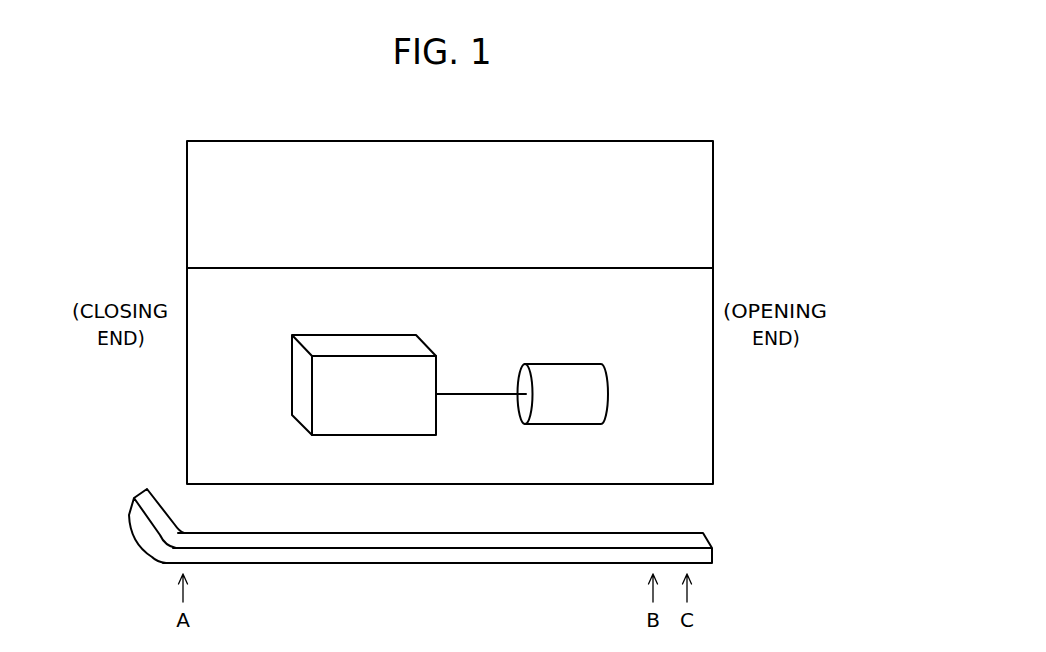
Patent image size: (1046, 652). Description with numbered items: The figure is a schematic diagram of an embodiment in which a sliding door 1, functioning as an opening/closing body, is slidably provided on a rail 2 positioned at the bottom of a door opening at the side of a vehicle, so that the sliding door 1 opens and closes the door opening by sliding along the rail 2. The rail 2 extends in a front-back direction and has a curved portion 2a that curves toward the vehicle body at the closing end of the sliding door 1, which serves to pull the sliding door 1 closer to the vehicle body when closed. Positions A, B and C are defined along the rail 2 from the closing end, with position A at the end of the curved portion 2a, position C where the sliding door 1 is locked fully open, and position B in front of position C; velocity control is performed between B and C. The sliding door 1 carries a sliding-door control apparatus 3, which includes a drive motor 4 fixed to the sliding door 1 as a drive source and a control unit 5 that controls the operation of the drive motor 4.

The sliding door 1 is at (746, 167).
The rail 2 is at (408, 537).
The curved portion 2a is at (158, 552).
The sliding-door control apparatus 3 is at (450, 354).
The drive motor 4 is at (565, 370).
The control unit 5 is at (352, 343).